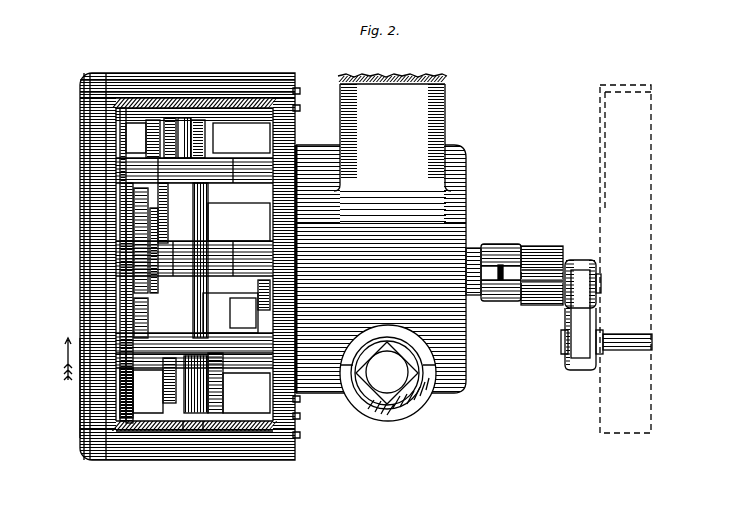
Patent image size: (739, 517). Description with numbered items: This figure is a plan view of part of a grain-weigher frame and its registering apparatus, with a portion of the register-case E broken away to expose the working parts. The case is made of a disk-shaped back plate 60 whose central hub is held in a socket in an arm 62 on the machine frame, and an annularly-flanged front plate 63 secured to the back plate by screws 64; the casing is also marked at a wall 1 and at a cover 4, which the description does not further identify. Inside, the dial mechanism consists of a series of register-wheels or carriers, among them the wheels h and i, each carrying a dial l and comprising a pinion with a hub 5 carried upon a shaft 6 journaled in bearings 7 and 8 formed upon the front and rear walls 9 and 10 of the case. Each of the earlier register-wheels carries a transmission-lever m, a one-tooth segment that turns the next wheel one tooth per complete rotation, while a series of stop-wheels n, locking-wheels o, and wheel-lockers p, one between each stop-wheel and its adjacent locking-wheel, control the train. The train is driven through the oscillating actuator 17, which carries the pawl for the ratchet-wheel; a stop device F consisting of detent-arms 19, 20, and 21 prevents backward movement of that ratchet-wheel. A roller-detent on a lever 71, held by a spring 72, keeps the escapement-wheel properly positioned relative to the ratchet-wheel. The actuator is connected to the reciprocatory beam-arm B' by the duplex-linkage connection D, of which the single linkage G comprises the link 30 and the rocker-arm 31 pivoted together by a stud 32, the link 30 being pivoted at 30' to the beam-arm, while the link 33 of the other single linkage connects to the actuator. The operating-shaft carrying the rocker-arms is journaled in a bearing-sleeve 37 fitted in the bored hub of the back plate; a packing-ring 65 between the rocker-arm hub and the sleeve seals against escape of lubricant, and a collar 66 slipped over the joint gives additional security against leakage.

The register-case E is at (173, 266).
The casing cover ring 4 is at (103, 470).
The hub 5 is at (115, 470).
The shaft 6 is at (148, 470).
The bearing 7 is at (177, 472).
The inner casing wall 1 is at (112, 201).
The dial l is at (108, 308).
The front plate 63 is at (72, 394).
The register-wheel i is at (118, 128).
The wheel-locker p is at (166, 123).
The spring 72 is at (195, 130).
The rear wall 10 is at (264, 124).
The locking-wheel o is at (160, 200).
The stop-wheel n is at (172, 232).
The transmission-lever m is at (153, 297).
The register-wheel h is at (144, 318).
The lever 71 is at (239, 222).
The bearing 8 is at (255, 240).
The pinion P is at (180, 312).
The actuator 17 is at (235, 313).
The front wall 9 is at (142, 386).
The detent-arm 19 is at (196, 396).
The stop device F is at (239, 384).
The detent-arm 21 is at (182, 438).
The detent-arm 20 is at (200, 438).
The back plate 60 is at (291, 216).
The arm 62 is at (392, 132).
The link 33 is at (300, 276).
The screws 64 is at (289, 100).
The bearing-sleeve 37 is at (465, 240).
The collar 66 is at (489, 240).
The packing-ring 65 is at (492, 274).
The duplex-linkage connection D is at (542, 264).
The rocker-arm 31 is at (550, 249).
The link 30 is at (594, 320).
The stud 32 is at (592, 275).
The single linkage G is at (572, 334).
The pivotal connection 30' is at (627, 352).
The beam-arm B' is at (637, 259).